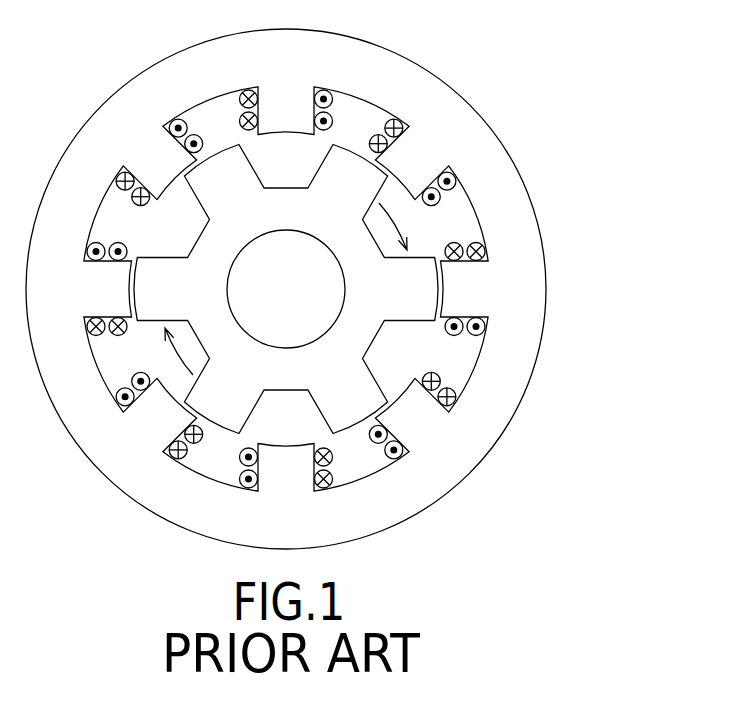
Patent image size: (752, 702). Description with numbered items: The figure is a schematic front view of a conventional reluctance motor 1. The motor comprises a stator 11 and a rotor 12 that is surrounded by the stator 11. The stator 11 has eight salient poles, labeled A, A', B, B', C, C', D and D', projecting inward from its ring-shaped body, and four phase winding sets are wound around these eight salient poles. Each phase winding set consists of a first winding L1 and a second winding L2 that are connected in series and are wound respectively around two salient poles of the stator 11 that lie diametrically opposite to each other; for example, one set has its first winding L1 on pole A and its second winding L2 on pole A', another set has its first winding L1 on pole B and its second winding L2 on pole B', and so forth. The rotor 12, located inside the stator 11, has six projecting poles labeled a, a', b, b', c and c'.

The reluctance motor 1 is at (324, 275).
The stator 11 is at (507, 209).
The rotor 12 is at (358, 323).
The first winding L1 is at (334, 98).
The second winding L2 is at (333, 480).